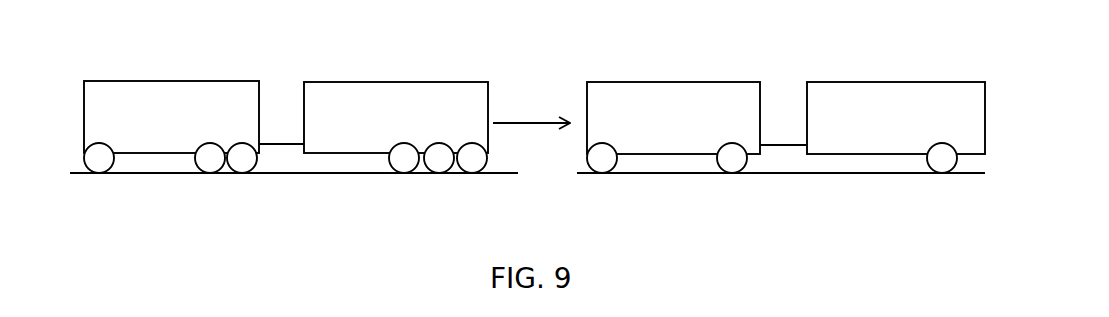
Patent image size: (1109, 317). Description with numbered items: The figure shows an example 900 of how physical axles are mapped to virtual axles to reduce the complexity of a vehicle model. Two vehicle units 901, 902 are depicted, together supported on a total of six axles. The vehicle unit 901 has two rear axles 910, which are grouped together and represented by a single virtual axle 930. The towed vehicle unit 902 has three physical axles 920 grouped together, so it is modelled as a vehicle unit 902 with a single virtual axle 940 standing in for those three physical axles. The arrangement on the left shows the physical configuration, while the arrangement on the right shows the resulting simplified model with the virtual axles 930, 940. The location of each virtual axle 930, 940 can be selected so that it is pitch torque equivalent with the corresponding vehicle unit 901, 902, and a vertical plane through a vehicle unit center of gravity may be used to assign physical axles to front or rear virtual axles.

The example 900 is at (125, 43).
The vehicle unit 901 is at (160, 81).
The towed vehicle unit 902 is at (342, 82).
The rear axles 910 is at (228, 178).
The physical axles 920 is at (427, 178).
The virtual axle 930 is at (725, 178).
The virtual axle 940 is at (933, 178).